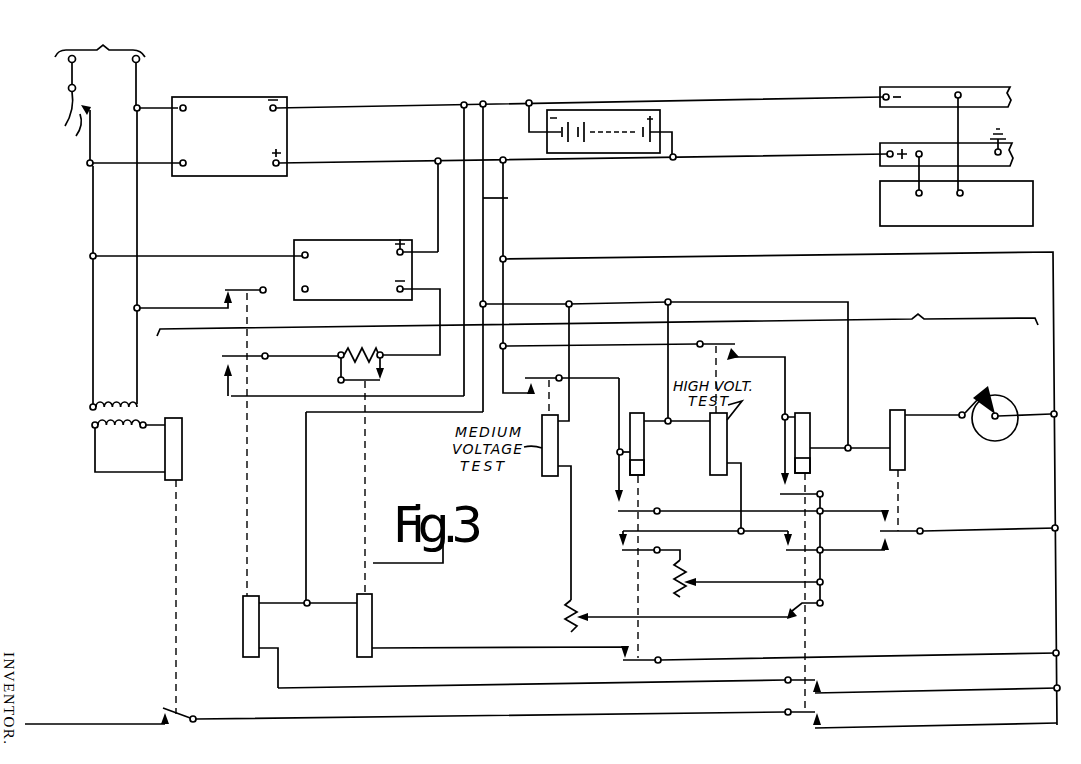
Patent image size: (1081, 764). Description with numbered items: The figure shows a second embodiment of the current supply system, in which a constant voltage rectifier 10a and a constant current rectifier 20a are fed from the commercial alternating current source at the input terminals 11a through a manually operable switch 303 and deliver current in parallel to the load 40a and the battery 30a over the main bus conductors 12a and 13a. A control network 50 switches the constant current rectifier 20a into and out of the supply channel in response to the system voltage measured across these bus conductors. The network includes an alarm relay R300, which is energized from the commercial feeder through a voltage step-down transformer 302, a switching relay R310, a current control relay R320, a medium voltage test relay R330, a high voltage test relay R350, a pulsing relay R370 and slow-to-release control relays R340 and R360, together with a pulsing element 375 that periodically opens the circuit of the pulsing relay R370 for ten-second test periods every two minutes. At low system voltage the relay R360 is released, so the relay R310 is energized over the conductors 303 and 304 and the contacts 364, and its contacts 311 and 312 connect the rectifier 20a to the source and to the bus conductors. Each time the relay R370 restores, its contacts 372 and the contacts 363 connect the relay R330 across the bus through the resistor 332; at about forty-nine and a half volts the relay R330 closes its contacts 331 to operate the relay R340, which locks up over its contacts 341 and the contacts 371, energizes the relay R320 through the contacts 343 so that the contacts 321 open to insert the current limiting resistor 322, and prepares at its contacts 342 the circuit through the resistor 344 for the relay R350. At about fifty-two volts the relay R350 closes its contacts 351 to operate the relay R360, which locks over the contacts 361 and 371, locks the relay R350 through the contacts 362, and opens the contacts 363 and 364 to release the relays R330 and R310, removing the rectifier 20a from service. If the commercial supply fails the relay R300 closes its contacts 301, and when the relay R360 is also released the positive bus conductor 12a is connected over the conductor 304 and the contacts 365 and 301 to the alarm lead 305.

The constant voltage rectifier 10a is at (210, 97).
The 110 V AC input terminals 11a is at (130, 66).
The positive bus conductor 12a is at (880, 143).
The negative bus conductor 13a is at (880, 88).
The constant current rectifier 20a is at (352, 242).
The battery 30a is at (661, 116).
The load 40a is at (879, 214).
The control network 50 is at (597, 307).
The contacts of alarm relay R300 301 is at (163, 712).
The voltage step-down transformer 302 is at (146, 414).
The conductor 303 is at (72, 130).
The conductor 304 is at (538, 260).
The alarm lead 305 is at (64, 727).
The contacts of switching relay R310 311 is at (226, 298).
The contacts of switching relay R310 312 is at (224, 364).
The contacts of current control relay R320 321 is at (386, 376).
The current limiting resistor 322 is at (364, 346).
The contacts of medium voltage test relay R330 331 is at (518, 359).
The resistor 332 is at (580, 614).
The contacts of control relay R340 341 is at (627, 506).
The contacts of control relay R340 342 is at (614, 545).
The contacts of control relay R340 343 is at (631, 661).
The resistor 344 is at (693, 575).
The contacts of high voltage test relay R350 351 is at (740, 352).
The contacts of control relay R360 361 is at (795, 485).
The contacts of control relay R360 362 is at (794, 546).
The contacts of control relay R360 363 is at (806, 611).
The contacts of control relay R360 364 is at (823, 689).
The contacts of control relay R360 365 is at (823, 723).
The contacts of pulsing relay R370 371 is at (893, 528).
The contacts of pulsing relay R370 372 is at (893, 540).
The pulsing element 375 is at (996, 442).
The alarm relay R300 is at (175, 451).
The switching relay R310 is at (256, 626).
The current control relay R320 is at (372, 625).
The medium voltage test relay R330 is at (558, 447).
The slow-to-release control relay R340 is at (644, 448).
The high voltage test relay R350 is at (727, 448).
The slow-to-release control relay R360 is at (801, 413).
The pulsing relay R370 is at (905, 445).